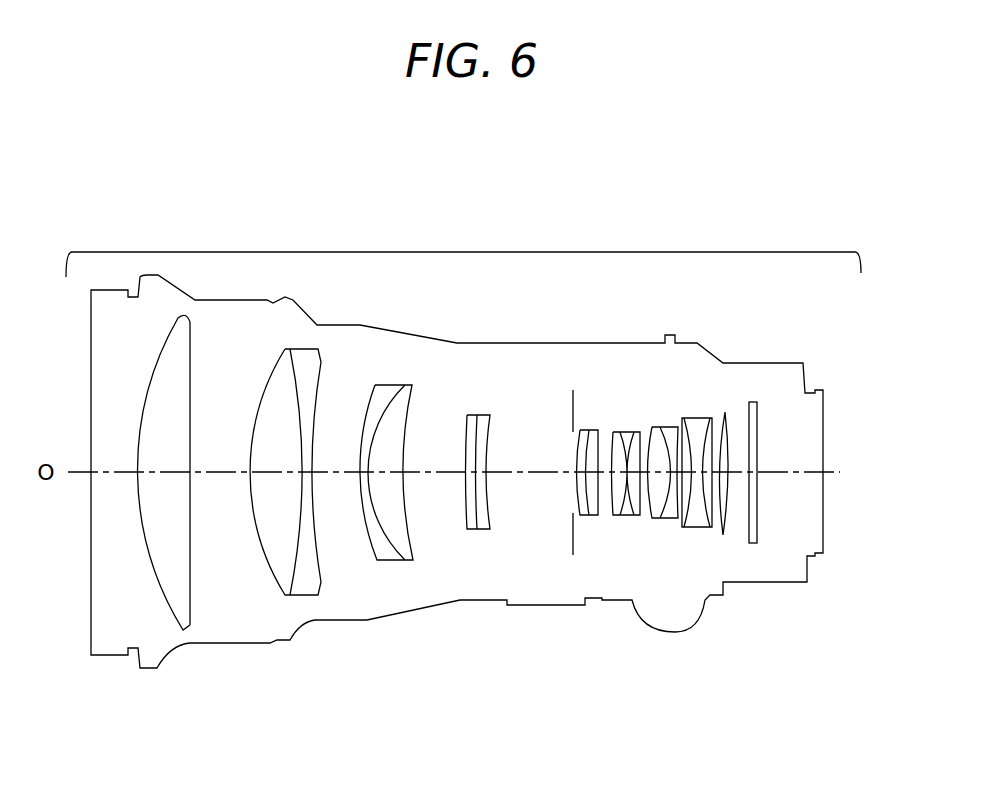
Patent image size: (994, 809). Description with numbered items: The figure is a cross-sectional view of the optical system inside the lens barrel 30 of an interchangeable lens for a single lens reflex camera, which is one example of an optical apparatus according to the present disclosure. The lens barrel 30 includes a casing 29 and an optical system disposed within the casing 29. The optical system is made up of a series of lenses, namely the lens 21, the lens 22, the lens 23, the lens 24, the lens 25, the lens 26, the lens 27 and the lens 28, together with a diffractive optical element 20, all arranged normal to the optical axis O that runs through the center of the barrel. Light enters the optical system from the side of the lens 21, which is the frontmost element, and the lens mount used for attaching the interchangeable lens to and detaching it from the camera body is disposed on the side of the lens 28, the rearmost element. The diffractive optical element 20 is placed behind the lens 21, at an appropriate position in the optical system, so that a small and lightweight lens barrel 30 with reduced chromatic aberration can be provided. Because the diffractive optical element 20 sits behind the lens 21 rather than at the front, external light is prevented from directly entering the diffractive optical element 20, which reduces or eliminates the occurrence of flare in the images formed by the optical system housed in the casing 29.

The diffractive optical element 20 is at (385, 550).
The lens 21 is at (192, 637).
The lens 22 is at (296, 597).
The lens 23 is at (478, 530).
The lens 24 is at (597, 515).
The lens 25 is at (632, 517).
The lens 26 is at (670, 518).
The lens 27 is at (723, 537).
The lens 28 is at (752, 543).
The casing 29 is at (803, 365).
The lens barrel 30 is at (463, 252).